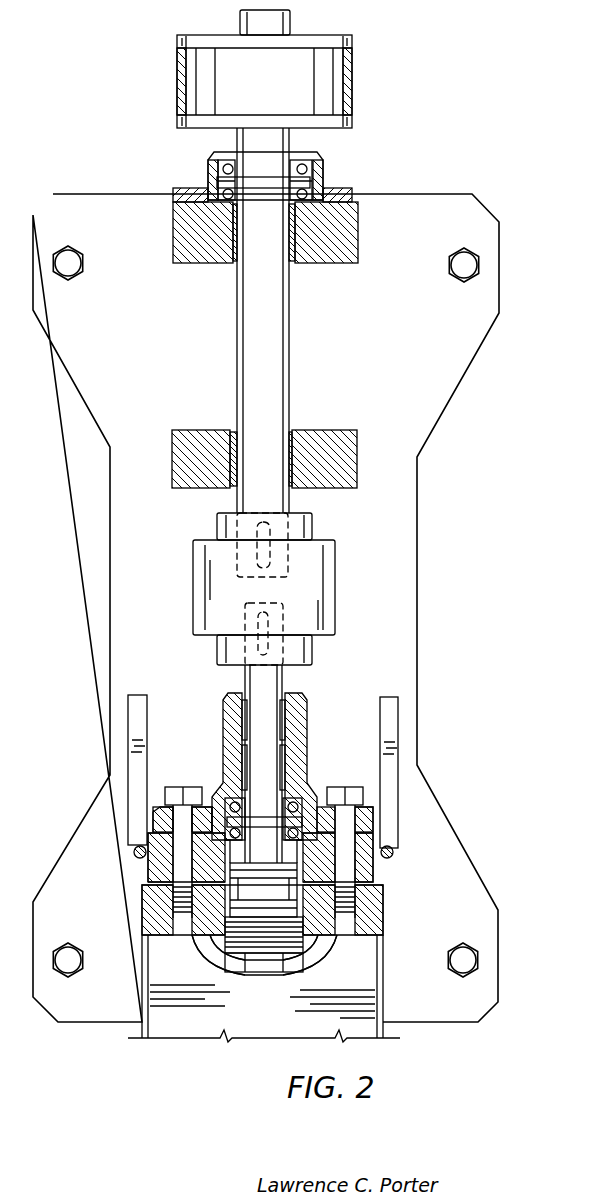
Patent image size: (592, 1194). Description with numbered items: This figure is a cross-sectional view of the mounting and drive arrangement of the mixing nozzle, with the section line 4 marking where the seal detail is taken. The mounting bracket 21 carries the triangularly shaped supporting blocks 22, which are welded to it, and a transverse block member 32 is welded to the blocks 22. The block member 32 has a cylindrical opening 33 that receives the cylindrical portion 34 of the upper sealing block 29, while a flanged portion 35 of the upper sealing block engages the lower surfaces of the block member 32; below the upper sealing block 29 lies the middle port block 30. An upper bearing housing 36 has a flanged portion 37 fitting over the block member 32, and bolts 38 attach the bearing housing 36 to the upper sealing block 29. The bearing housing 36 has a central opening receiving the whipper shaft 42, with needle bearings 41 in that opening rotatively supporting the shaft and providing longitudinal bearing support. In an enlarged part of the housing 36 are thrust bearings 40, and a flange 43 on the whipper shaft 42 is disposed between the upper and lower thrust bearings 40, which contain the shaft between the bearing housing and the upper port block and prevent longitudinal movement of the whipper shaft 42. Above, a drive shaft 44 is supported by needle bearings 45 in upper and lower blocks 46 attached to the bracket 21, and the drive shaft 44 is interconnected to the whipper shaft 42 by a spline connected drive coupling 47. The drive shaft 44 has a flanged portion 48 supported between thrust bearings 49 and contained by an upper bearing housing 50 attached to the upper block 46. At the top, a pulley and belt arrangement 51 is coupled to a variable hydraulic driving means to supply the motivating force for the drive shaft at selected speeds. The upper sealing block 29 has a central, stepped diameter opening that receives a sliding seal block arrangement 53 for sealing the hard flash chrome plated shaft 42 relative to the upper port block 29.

The mounting bracket 21 is at (418, 515).
The supporting blocks 22 is at (137, 736).
The upper sealing block 29 is at (385, 925).
The middle port block 30 is at (370, 990).
The transverse block member 32 is at (392, 858).
The cylindrical opening 33 is at (355, 900).
The cylindrical portion 34 is at (158, 870).
The flanged portion 35 is at (155, 908).
The upper bearing housing 36 is at (307, 745).
The flanged portion 37 is at (160, 812).
The bolts 38 is at (183, 787).
The thrust bearings 40 is at (300, 812).
The needle bearings 41 is at (285, 715).
The whipper shaft 42 is at (277, 686).
The flange 43 is at (200, 836).
The drive shaft 44 is at (289, 358).
The needle bearings 45 is at (293, 252).
The upper and lower blocks 46 is at (348, 240).
The spline connected drive coupling 47 is at (333, 585).
The flanged portion 48 is at (320, 186).
The thrust bearings 49 is at (323, 158).
The upper bearing housing 50 is at (208, 158).
The pulley and belt arrangement 51 is at (367, 77).
The sliding seal block arrangement 53 is at (220, 943).
The section line 4 is at (238, 838).